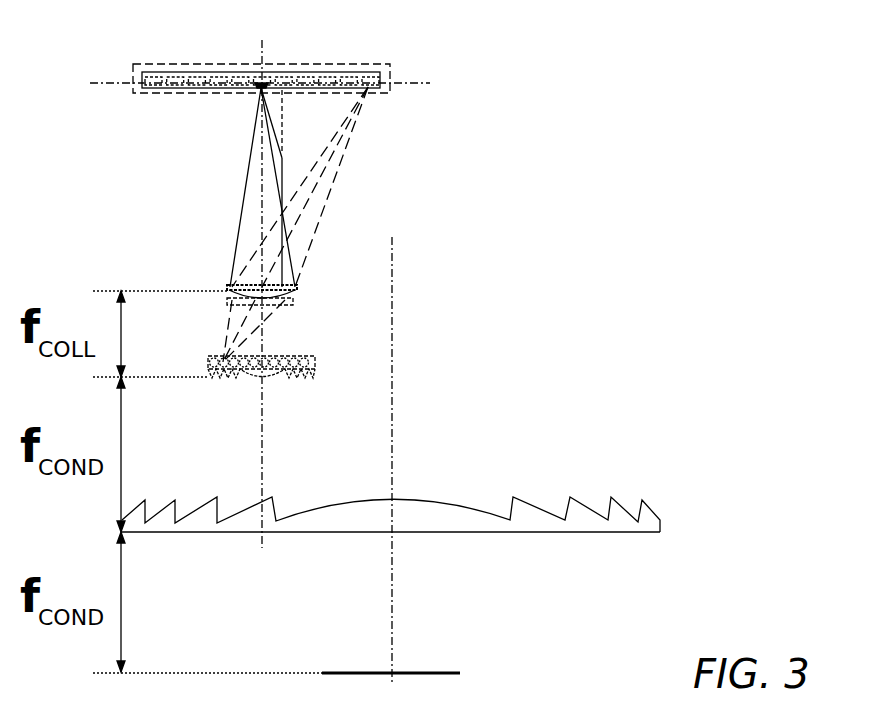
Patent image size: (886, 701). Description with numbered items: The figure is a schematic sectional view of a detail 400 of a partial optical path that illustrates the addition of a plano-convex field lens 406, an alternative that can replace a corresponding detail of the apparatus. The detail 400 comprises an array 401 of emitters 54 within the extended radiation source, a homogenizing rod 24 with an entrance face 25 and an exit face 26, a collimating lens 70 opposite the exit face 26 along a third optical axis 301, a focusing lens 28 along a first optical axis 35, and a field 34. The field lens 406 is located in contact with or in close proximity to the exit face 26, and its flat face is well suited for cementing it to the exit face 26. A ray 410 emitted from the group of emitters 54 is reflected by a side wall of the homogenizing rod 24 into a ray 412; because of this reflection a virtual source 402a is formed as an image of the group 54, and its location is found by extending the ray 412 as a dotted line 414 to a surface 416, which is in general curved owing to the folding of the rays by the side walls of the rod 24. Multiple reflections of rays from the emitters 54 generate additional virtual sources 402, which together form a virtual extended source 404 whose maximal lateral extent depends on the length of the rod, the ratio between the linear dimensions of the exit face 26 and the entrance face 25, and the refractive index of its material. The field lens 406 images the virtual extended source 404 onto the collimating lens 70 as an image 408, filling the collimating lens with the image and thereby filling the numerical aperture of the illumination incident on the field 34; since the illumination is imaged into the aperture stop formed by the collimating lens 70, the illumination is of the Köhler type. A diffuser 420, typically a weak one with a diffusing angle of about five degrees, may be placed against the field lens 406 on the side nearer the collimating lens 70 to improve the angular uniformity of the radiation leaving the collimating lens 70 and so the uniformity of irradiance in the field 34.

The detail 400 is at (710, 320).
The array 401 is at (133, 95).
The virtual sources 402 is at (193, 90).
The virtual source 402a is at (283, 88).
The emitters 54 is at (257, 80).
The surface 416 is at (405, 84).
The dotted line 414 is at (283, 123).
The ray 412 is at (280, 212).
The ray 410 is at (268, 118).
The homogenizing rod 24 is at (247, 193).
The entrance face 25 is at (253, 86).
The virtual extended source 404 is at (392, 93).
The plano-convex field lens 406 is at (227, 290).
The exit face 26 is at (293, 283).
The diffuser 420 is at (293, 302).
The image 408 is at (315, 358).
The collimating lens 70 is at (313, 378).
The third optical axis 301 is at (262, 455).
The first optical axis 35 is at (392, 316).
The focusing lens 28 is at (660, 522).
The field 34 is at (447, 672).